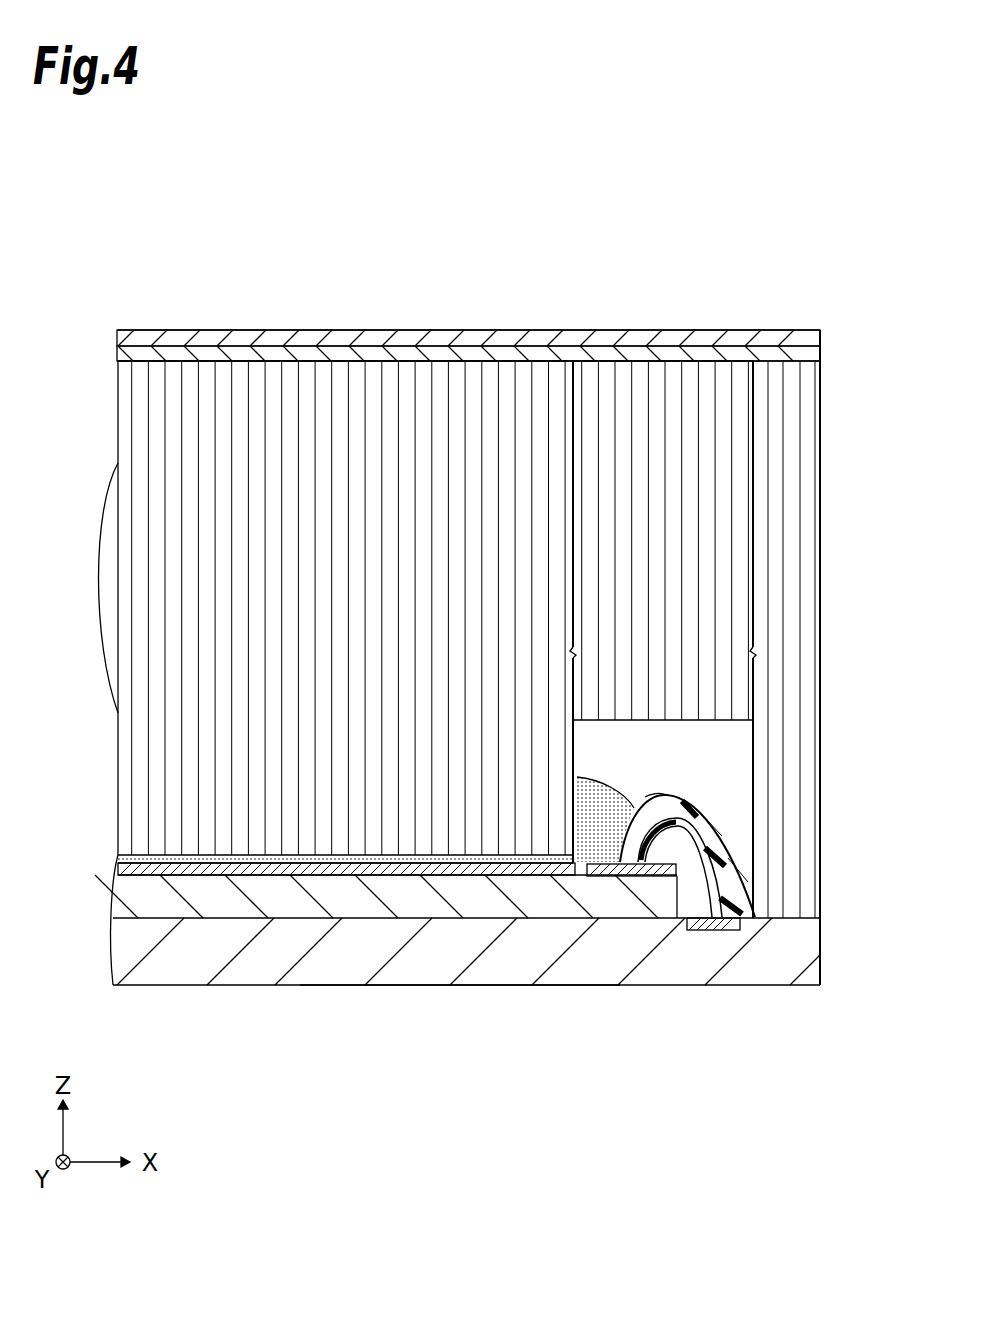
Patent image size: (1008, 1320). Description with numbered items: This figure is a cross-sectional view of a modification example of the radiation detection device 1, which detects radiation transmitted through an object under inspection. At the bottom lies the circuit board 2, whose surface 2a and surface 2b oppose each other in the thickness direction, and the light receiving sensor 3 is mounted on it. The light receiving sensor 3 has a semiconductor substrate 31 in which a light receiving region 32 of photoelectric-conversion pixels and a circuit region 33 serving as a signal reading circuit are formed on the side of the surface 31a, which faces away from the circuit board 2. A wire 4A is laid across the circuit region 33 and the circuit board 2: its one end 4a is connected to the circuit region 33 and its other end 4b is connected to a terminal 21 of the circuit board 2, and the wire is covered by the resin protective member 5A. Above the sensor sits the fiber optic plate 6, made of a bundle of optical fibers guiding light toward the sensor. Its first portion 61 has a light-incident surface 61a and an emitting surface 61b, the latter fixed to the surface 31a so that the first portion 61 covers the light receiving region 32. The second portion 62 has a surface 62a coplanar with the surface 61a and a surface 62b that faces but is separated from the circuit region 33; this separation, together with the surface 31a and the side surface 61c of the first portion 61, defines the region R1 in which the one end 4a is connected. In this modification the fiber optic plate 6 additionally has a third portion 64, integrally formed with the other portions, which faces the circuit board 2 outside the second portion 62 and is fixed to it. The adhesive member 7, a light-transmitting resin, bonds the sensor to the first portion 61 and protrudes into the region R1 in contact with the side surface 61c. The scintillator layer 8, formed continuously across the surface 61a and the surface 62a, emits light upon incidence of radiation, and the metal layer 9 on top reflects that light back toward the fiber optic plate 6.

The radiation detection device 1 is at (616, 225).
The circuit board 2 is at (808, 945).
The surface 2a is at (505, 912).
The surface 2b is at (462, 985).
The light receiving sensor 3 is at (400, 902).
The semiconductor substrate 31 is at (277, 892).
The surface 31a is at (223, 856).
The light receiving region 32 is at (351, 875).
The circuit region 33 is at (660, 878).
The terminal 21 is at (725, 930).
The wire 4A is at (716, 832).
The one end 4a is at (646, 810).
The other end 4b is at (755, 895).
The protective member 5A is at (728, 860).
The fiber optic plate 6 is at (438, 354).
The first portion 61 is at (304, 382).
The surface 61a is at (172, 357).
The surface 61b is at (149, 877).
The side surface 61c is at (577, 770).
The second portion 62 is at (622, 372).
The surface 62a is at (705, 360).
The surface 62b is at (723, 722).
The third portion 64 is at (810, 667).
The adhesive member 7 is at (581, 868).
The scintillator layer 8 is at (810, 350).
The metal layer 9 is at (808, 334).
The region R1 is at (645, 751).